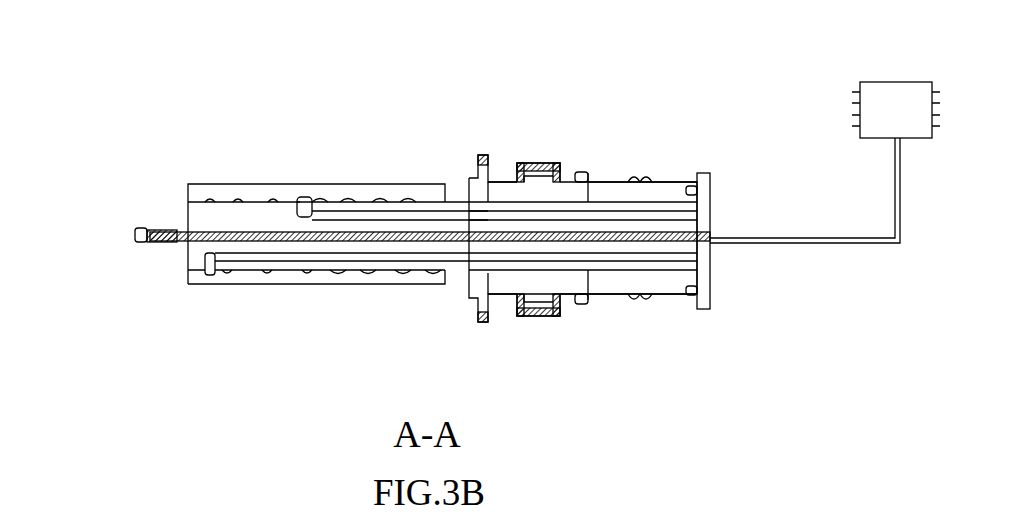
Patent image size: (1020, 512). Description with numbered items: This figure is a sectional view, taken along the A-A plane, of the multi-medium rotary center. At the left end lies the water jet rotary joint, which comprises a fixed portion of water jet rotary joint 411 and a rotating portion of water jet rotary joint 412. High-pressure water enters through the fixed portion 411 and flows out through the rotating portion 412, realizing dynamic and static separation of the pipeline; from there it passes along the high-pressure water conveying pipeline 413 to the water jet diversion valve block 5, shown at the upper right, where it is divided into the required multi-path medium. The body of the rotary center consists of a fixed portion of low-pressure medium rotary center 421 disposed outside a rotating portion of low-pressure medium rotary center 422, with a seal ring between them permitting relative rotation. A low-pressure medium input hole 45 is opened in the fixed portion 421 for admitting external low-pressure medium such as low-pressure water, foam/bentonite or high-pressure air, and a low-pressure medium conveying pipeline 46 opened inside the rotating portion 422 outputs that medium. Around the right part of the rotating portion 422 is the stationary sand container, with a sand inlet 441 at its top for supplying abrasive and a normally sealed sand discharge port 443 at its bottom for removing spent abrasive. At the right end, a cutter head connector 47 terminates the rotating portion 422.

The water jet diversion valve block 5 is at (878, 82).
The fixed portion of water jet rotary joint 411 is at (136, 240).
The rotating portion of water jet rotary joint 412 is at (178, 241).
The high-pressure water conveying pipeline 413 is at (262, 249).
The fixed portion of low-pressure medium rotary center 421 is at (222, 184).
The rotating portion of low-pressure medium rotary center 422 is at (605, 252).
The sand inlet 441 is at (559, 165).
The sand discharge port 443 is at (537, 306).
The low-pressure medium input hole 45 is at (334, 280).
The low-pressure medium conveying pipeline 46 is at (334, 204).
The cutter head connector 47 is at (712, 183).